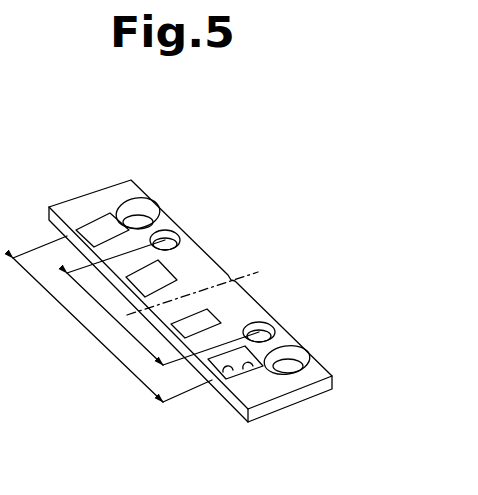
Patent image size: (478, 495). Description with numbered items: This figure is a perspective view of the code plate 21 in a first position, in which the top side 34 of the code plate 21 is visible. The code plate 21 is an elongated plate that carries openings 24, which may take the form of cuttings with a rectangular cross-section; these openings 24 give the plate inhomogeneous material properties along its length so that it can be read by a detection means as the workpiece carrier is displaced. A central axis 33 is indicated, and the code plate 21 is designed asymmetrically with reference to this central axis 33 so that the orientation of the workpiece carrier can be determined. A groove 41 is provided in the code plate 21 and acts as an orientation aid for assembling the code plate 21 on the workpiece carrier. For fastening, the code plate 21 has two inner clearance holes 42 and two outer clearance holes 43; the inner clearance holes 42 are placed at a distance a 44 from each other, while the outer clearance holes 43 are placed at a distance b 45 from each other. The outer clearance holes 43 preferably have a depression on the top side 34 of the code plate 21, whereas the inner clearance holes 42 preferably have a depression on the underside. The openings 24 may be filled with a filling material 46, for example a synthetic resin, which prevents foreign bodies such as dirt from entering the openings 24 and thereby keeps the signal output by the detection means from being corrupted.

The code plate 21 is at (245, 152).
The openings 24 is at (214, 377).
The central axis 33 is at (258, 262).
The top side 34 is at (200, 248).
The groove 41 is at (250, 257).
The inner clearance holes 42 is at (180, 228).
The outer clearance holes 43 is at (143, 224).
The distance a 44 is at (126, 322).
The distance b 45 is at (133, 365).
The filling material 46 is at (260, 367).